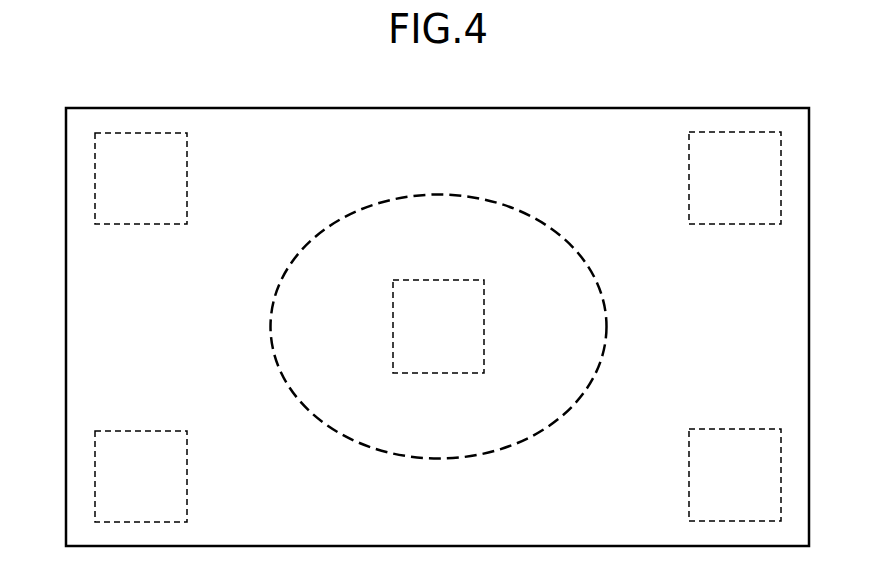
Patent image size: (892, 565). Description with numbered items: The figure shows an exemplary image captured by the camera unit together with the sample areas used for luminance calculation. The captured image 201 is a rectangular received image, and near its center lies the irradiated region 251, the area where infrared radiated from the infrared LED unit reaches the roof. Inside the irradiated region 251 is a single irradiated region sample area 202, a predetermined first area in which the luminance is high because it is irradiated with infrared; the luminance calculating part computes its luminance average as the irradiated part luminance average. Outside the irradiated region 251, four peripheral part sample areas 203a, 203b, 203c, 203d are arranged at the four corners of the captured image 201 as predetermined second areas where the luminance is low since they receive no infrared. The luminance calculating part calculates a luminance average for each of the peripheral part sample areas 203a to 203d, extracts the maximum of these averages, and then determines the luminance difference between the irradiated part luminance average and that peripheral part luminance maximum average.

The captured image 201 is at (717, 107).
The irradiated region sample area 202 is at (444, 260).
The peripheral part sample area 203a is at (188, 159).
The peripheral part sample area 203b is at (188, 460).
The peripheral part sample area 203c is at (689, 160).
The peripheral part sample area 203d is at (689, 463).
The irradiated region 251 is at (505, 203).